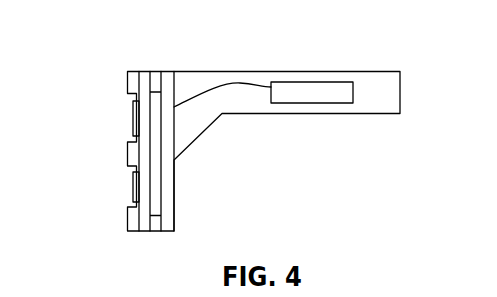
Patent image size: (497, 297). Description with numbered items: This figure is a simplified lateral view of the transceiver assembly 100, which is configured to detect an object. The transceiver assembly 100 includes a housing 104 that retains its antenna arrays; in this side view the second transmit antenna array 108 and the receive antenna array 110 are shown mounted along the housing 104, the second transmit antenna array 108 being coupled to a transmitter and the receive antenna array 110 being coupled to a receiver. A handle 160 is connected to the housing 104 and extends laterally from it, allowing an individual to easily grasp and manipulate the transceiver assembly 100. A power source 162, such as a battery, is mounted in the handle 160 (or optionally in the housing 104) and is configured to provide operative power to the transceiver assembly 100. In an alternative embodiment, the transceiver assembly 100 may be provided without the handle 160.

The transceiver assembly 100 is at (128, 44).
The housing 104 is at (155, 71).
The second transmit antenna array 108 is at (133, 120).
The receive antenna array 110 is at (133, 186).
The handle 160 is at (320, 71).
The power source 162 is at (313, 103).